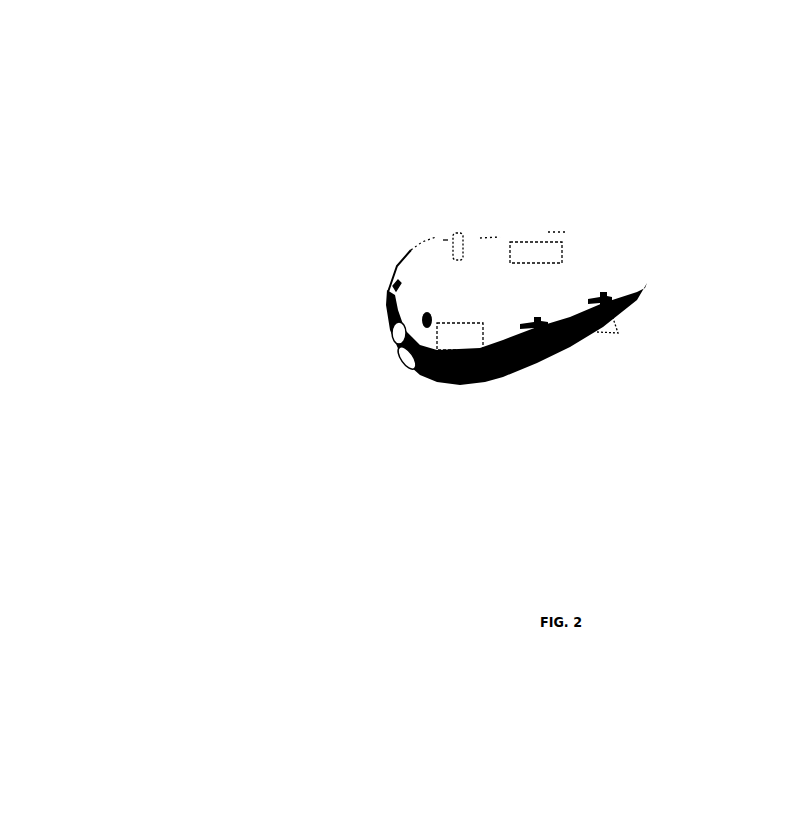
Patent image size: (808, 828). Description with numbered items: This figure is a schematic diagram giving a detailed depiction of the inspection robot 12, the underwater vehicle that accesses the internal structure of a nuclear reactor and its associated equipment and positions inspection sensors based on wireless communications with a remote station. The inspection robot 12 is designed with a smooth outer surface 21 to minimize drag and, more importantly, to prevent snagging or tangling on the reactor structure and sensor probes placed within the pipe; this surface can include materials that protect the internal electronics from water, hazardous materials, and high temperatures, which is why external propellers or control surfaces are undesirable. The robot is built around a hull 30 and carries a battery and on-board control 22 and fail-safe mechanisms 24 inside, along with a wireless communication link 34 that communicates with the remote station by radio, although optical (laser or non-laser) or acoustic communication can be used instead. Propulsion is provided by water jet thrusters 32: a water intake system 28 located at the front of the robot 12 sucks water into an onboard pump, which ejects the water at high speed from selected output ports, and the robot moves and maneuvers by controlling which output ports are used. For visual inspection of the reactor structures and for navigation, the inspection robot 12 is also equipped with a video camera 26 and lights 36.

The inspection robot 12 is at (79, 54).
The smooth outer surface 21 is at (612, 225).
The battery and on-board control 22 is at (514, 238).
The fail-safe mechanisms 24 is at (448, 228).
The video camera 26 is at (387, 280).
The water intake system 28 is at (385, 324).
The hull 30 is at (564, 275).
The water jet thrusters 32 is at (649, 327).
The wireless communication link 34 is at (489, 338).
The lights 36 is at (440, 317).